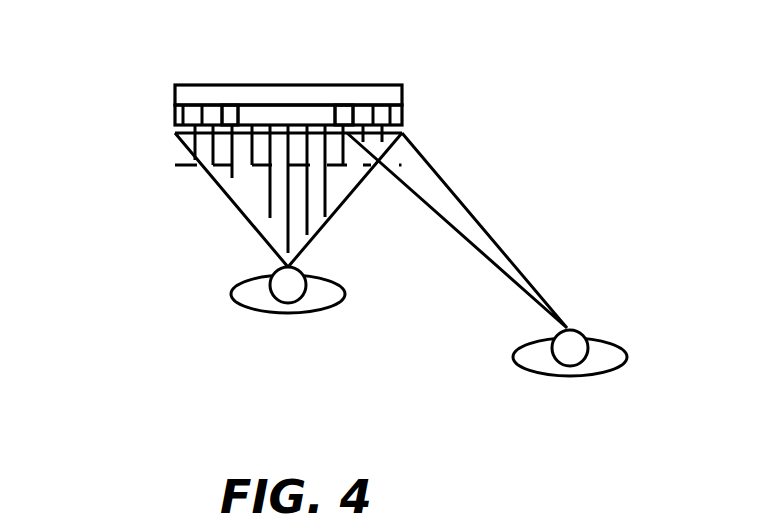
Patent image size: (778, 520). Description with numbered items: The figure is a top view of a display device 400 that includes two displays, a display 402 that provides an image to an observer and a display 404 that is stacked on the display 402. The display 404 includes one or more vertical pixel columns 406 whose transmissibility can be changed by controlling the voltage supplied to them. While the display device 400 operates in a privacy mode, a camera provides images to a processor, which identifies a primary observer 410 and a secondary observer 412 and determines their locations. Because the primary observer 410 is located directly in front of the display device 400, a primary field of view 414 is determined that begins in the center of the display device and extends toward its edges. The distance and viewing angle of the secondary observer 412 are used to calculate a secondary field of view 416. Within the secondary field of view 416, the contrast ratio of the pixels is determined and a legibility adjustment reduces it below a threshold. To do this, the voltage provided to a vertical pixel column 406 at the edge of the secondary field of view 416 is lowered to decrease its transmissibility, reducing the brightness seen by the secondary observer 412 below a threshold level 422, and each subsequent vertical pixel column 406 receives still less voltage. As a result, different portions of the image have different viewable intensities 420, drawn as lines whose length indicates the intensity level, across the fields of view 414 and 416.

The display device 400 is at (276, 83).
The display 402 is at (175, 96).
The display 404 is at (402, 113).
The vertical pixel columns 406 is at (232, 112).
The primary observer 410 is at (327, 292).
The secondary observer 412 is at (600, 358).
The primary field of view 414 is at (310, 243).
The secondary field of view 416 is at (468, 227).
The viewable intensities 420 is at (197, 205).
The threshold level 422 is at (176, 165).